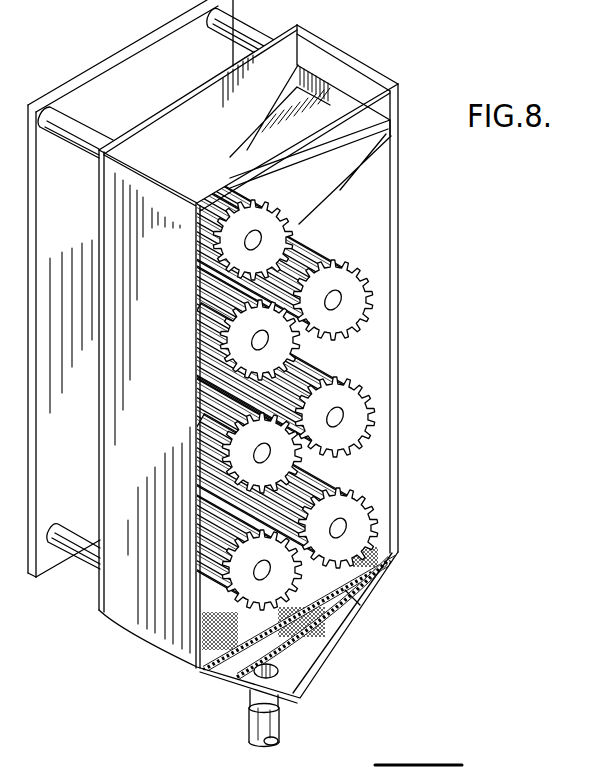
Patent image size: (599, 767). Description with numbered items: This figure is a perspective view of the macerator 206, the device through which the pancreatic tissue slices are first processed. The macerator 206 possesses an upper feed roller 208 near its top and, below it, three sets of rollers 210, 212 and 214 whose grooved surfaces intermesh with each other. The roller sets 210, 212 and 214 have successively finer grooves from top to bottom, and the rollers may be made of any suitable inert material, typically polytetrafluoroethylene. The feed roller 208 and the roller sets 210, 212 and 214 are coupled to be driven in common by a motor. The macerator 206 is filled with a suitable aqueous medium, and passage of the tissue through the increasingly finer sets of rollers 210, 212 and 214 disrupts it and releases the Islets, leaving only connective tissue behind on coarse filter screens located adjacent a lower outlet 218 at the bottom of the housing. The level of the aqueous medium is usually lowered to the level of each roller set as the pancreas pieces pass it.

The macerator 206 is at (433, 198).
The upper feed roller 208 is at (263, 212).
The roller set 210 is at (347, 328).
The roller set 212 is at (240, 446).
The roller set 214 is at (362, 518).
The lower outlet 218 is at (287, 703).